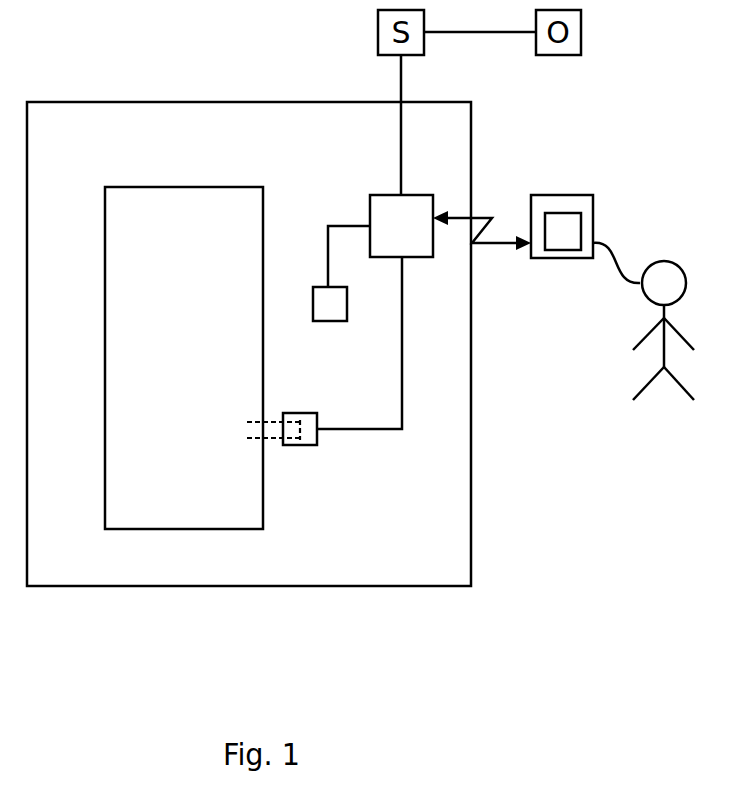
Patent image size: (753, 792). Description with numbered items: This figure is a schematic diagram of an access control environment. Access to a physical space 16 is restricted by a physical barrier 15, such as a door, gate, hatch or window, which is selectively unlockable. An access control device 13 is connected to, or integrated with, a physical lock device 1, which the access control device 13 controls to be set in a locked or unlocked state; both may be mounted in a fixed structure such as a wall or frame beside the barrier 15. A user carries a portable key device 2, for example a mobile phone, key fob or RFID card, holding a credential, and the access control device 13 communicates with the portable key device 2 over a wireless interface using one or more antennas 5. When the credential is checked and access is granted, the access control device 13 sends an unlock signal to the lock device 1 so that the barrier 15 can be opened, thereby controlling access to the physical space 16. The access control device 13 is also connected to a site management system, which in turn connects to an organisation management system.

The physical lock device 1 is at (301, 446).
The portable key device 2 is at (570, 209).
The antenna 5 is at (347, 304).
The access control device 13 is at (418, 238).
The physical barrier 15 is at (202, 226).
The physical space 16 is at (266, 140).